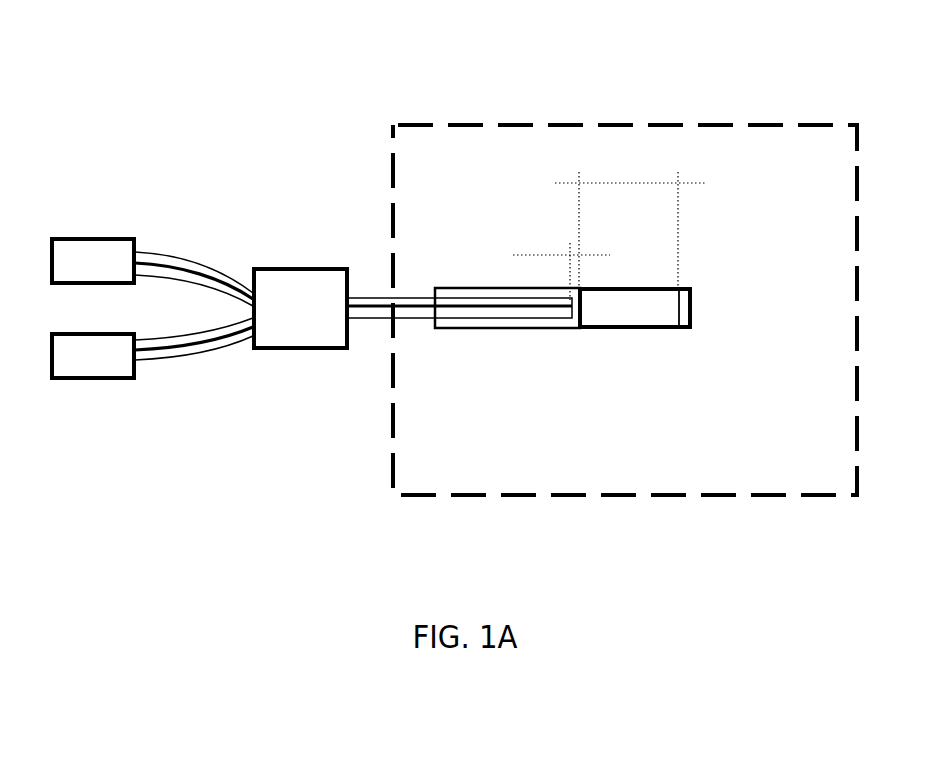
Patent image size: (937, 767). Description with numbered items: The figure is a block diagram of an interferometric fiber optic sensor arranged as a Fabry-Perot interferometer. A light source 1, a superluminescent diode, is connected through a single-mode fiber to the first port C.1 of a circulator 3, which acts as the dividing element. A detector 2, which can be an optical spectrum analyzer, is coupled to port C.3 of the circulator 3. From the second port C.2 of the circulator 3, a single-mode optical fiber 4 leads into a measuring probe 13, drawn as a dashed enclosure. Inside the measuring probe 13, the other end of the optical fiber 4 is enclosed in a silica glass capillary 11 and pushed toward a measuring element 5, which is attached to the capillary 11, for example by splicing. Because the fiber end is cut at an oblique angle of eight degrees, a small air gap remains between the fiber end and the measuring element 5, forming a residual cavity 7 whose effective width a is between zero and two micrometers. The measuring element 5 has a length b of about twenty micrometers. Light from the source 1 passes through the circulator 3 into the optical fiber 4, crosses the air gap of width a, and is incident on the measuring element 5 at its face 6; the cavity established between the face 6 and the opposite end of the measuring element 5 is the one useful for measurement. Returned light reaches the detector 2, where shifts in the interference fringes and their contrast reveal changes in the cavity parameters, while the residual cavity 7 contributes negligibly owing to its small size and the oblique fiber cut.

The light source 1 is at (93, 238).
The detector 2 is at (90, 378).
The circulator 3 is at (268, 268).
The single-mode optical fiber 4 is at (405, 318).
The measuring element 5 is at (662, 328).
The face 6 is at (693, 316).
The residual cavity 7 is at (580, 328).
The silica glass capillary 11 is at (508, 328).
The measuring probe 13 is at (568, 125).
The effective width of residual cavity a is at (561, 255).
The length of measuring element b is at (630, 215).